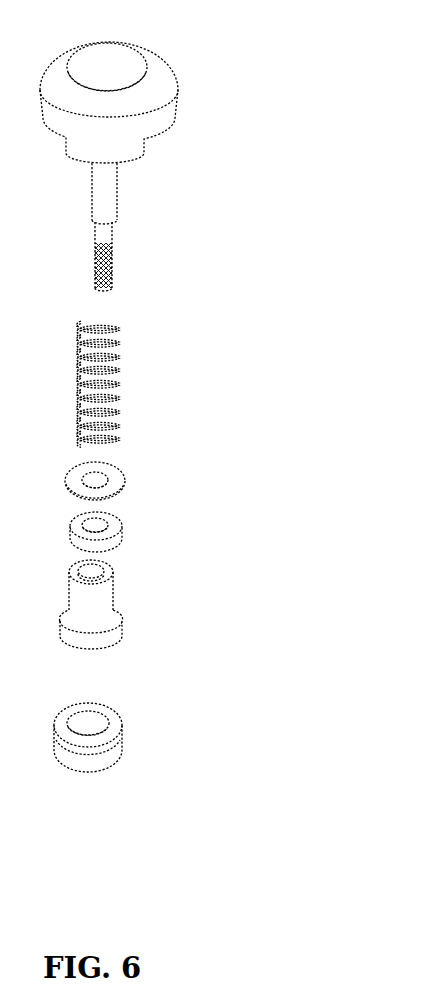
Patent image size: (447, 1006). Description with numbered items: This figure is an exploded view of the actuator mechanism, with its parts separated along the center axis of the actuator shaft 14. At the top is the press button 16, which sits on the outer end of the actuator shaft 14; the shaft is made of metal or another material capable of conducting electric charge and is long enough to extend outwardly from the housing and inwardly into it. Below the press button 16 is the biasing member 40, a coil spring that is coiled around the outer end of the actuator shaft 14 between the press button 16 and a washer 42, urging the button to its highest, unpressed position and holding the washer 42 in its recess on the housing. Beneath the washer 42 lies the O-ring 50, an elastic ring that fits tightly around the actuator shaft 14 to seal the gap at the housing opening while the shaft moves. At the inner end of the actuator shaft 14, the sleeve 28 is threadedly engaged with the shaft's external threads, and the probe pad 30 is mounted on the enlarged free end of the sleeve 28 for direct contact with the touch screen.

The press button 16 is at (173, 71).
The actuator shaft 14 is at (114, 218).
The biasing member 40 is at (120, 339).
The washer 42 is at (128, 482).
The O-ring 50 is at (123, 535).
The sleeve 28 is at (121, 625).
The probe pad 30 is at (121, 743).